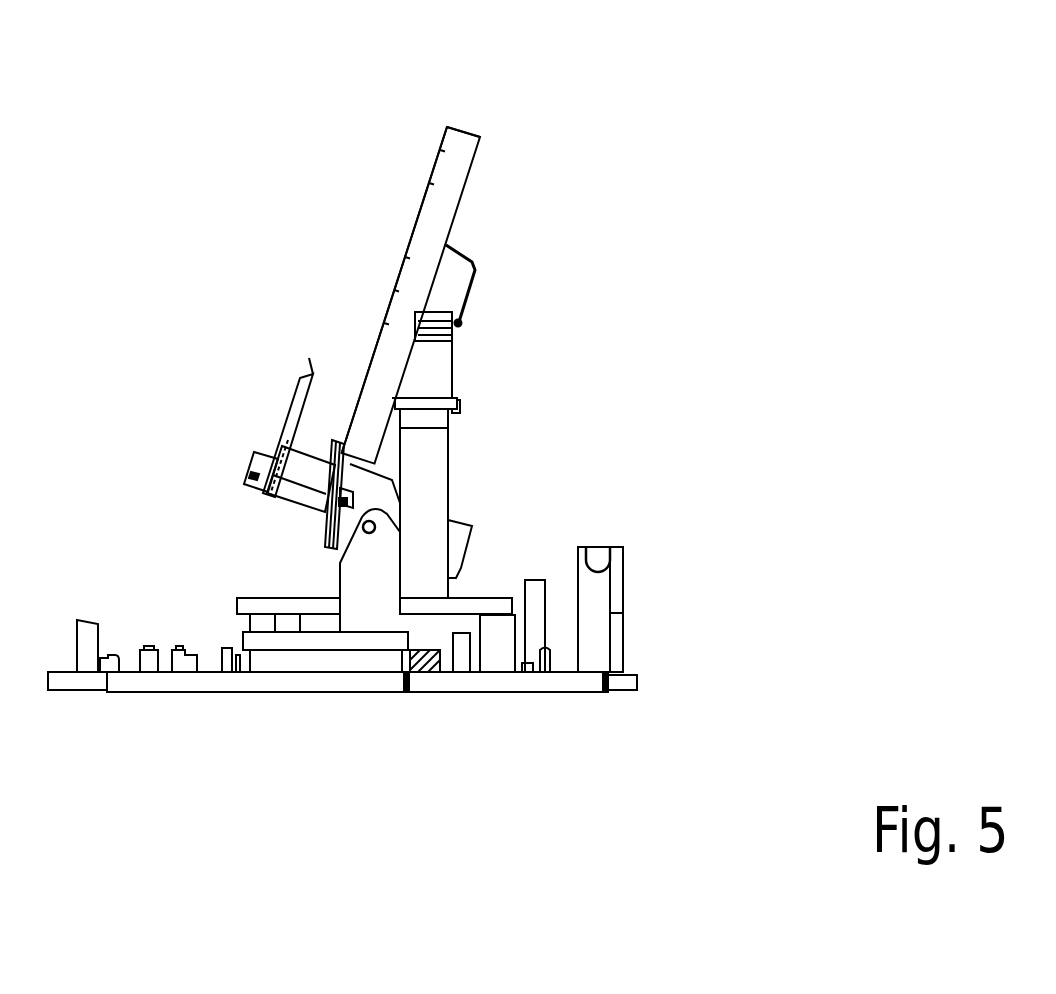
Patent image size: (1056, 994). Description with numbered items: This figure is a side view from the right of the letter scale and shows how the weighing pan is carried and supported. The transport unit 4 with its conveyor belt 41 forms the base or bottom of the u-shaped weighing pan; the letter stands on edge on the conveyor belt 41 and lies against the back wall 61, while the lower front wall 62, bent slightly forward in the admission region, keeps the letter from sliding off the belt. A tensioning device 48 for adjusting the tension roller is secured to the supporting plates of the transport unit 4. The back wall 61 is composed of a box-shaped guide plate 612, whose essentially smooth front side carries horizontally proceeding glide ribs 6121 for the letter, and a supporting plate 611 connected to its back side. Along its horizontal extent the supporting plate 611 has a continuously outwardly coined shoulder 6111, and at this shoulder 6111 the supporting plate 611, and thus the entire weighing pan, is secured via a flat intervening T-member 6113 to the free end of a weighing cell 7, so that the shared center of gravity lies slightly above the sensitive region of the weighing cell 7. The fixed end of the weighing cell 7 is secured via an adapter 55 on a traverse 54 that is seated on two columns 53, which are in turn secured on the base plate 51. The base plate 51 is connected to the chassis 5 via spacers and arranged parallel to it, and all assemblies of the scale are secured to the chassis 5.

The transport unit 4 is at (328, 508).
The conveyor belt 41 is at (302, 490).
The tensioning device 48 is at (258, 475).
The chassis 5 is at (640, 680).
The base plate 51 is at (489, 606).
The columns 53 is at (428, 490).
The traverse 54 is at (428, 421).
The adapter 55 is at (460, 405).
The back wall 61 is at (480, 137).
The supporting plate 611 is at (470, 263).
The shoulder 6111 is at (458, 322).
The T-member 6113 is at (452, 335).
The guide plate 612 is at (447, 127).
The glide ribs 6121 is at (413, 223).
The front wall 62 is at (295, 393).
The weighing cell 7 is at (453, 366).